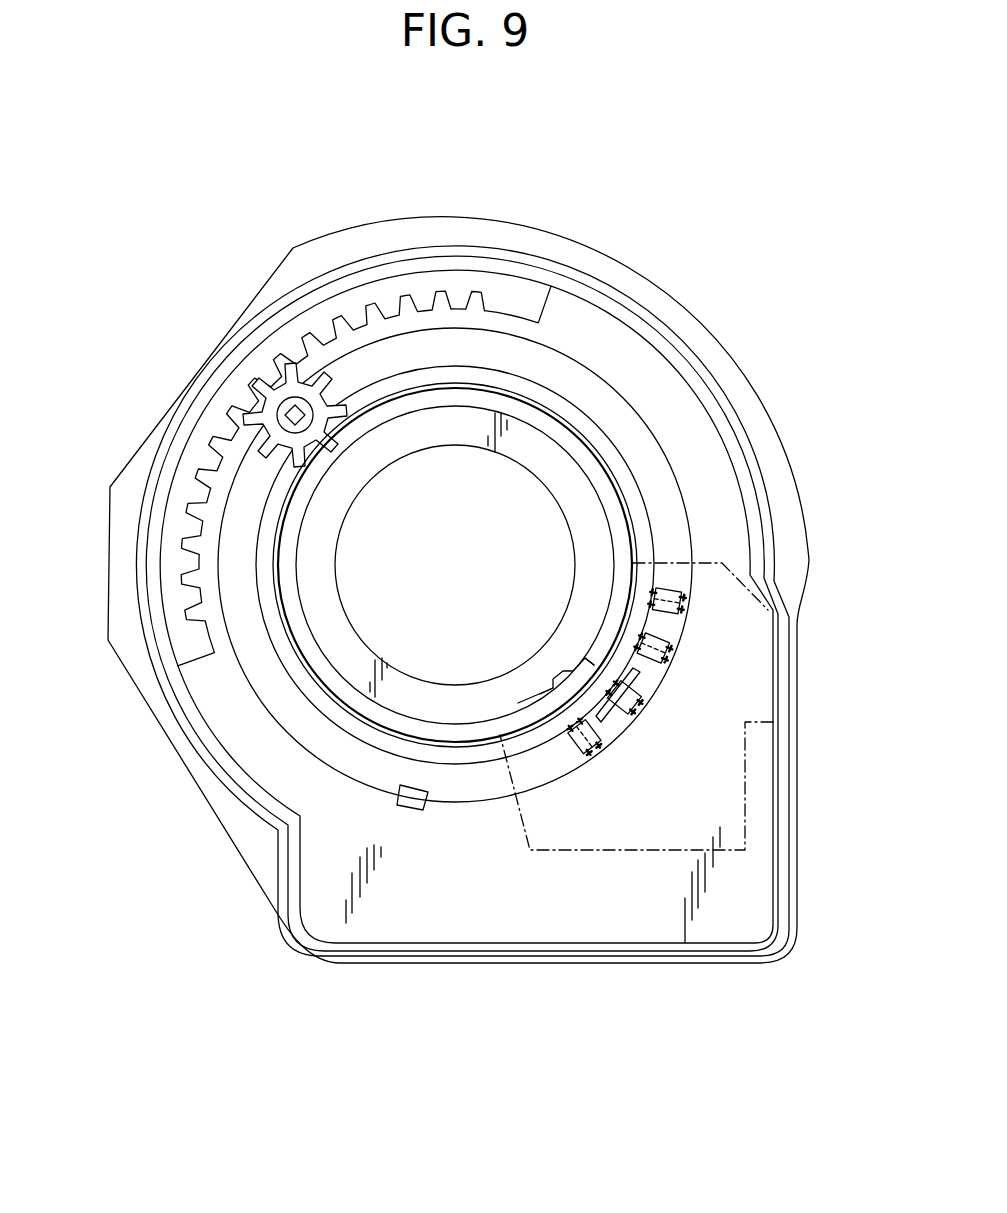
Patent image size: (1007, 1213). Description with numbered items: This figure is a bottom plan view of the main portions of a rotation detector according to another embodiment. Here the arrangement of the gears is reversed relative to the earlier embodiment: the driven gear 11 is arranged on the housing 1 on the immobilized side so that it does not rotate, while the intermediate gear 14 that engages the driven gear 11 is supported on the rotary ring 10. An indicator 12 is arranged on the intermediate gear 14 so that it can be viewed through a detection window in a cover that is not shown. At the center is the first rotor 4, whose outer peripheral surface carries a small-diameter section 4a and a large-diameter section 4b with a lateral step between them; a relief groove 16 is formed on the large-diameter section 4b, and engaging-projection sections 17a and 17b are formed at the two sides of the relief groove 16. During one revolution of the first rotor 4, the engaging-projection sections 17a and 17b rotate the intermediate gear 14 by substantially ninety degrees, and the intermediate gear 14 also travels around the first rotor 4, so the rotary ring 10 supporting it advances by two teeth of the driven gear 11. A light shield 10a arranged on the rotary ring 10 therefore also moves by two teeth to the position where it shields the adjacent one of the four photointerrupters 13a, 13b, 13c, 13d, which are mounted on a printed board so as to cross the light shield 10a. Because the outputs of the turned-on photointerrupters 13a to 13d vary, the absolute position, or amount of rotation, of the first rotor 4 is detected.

The housing 1 is at (122, 512).
The first rotor 4 is at (583, 500).
The small-diameter section 4a is at (637, 523).
The large-diameter section 4b is at (593, 450).
The rotary ring 10 is at (467, 780).
The light shield 10a is at (645, 675).
The driven gear 11 is at (480, 298).
The indicator 12 is at (278, 410).
The photointerrupter 13a is at (688, 603).
The photointerrupter 13b is at (673, 652).
The photointerrupter 13c is at (640, 713).
The photointerrupter 13d is at (597, 750).
The intermediate gear 14 is at (245, 436).
The relief groove 16 is at (565, 677).
The engaging-projection section 17a is at (545, 690).
The engaging-projection section 17b is at (588, 664).